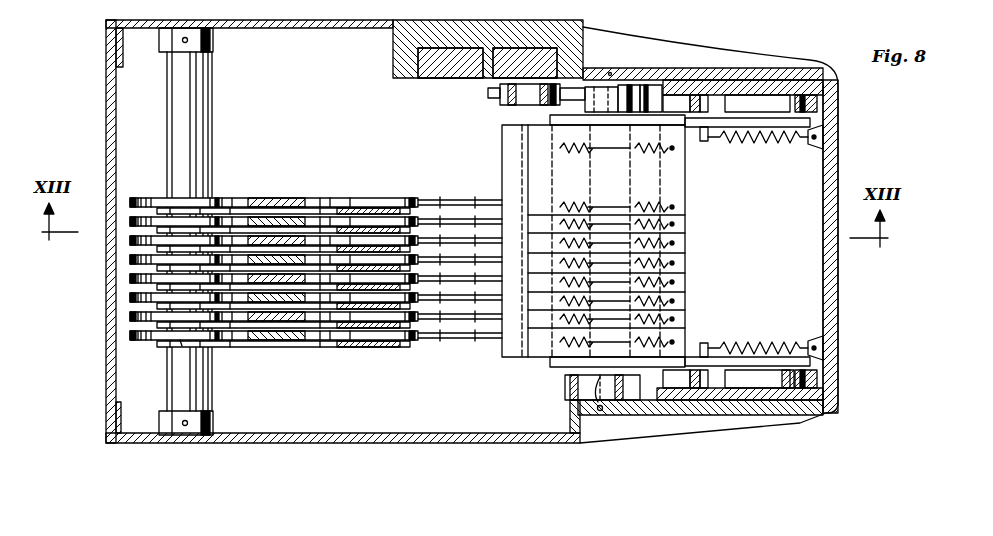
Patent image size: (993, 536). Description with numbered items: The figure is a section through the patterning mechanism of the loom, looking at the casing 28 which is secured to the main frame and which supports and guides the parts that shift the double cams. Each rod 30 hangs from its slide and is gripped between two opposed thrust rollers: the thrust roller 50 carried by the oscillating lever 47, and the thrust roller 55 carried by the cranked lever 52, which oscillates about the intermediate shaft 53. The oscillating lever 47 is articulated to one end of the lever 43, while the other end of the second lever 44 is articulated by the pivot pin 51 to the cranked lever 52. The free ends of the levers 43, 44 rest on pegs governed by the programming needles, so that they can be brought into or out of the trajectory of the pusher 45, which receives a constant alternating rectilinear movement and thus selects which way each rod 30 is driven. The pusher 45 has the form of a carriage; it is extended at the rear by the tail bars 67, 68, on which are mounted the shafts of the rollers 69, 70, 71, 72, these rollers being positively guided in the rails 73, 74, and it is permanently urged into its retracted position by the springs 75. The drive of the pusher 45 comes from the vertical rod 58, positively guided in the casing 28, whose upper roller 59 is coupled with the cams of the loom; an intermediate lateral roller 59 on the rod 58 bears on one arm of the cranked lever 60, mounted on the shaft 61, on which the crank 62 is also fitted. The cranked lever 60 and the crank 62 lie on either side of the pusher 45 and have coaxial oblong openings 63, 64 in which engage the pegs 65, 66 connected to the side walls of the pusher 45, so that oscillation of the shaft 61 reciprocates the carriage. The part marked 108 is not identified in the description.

The casing 28 is at (108, 350).
The rod 30 is at (273, 217).
The lever 43 is at (482, 242).
The second lever 44 is at (446, 236).
The pusher 45 is at (718, 247).
The oscillating lever 47 is at (395, 242).
The thrust roller 50 is at (360, 234).
The pivot pin 51 is at (180, 344).
The cranked lever 52 is at (130, 202).
The intermediate shaft 53 is at (192, 118).
The thrust roller 55 is at (140, 198).
The vertical rod 58 is at (528, 40).
The roller 59 is at (505, 100).
The cranked lever 60 is at (650, 86).
The shaft 61 is at (626, 86).
The crank 62 is at (566, 390).
The oblong opening 63 is at (598, 88).
The oblong opening 64 is at (600, 410).
The peg 65 is at (620, 118).
The peg 66 is at (585, 370).
The tail bar 67 is at (812, 123).
The tail bar 68 is at (812, 361).
The roller 69 is at (700, 92).
The roller 70 is at (818, 104).
The roller 71 is at (690, 396).
The roller 72 is at (793, 392).
The rail 73 is at (838, 88).
The rail 74 is at (820, 380).
The spring 75 is at (760, 140).
The insert block 108 is at (447, 74).